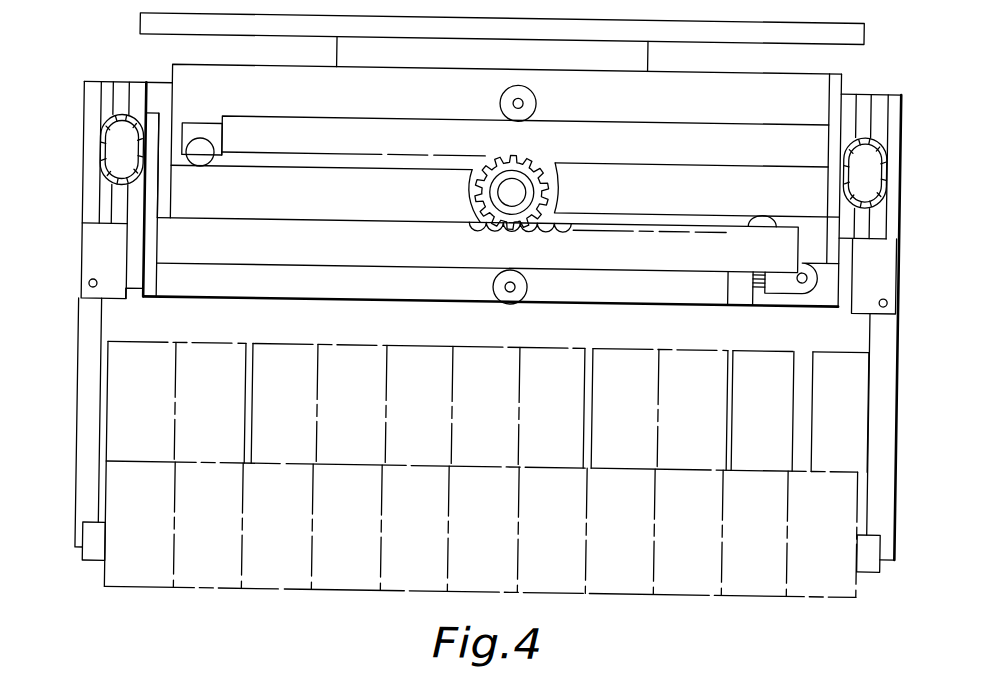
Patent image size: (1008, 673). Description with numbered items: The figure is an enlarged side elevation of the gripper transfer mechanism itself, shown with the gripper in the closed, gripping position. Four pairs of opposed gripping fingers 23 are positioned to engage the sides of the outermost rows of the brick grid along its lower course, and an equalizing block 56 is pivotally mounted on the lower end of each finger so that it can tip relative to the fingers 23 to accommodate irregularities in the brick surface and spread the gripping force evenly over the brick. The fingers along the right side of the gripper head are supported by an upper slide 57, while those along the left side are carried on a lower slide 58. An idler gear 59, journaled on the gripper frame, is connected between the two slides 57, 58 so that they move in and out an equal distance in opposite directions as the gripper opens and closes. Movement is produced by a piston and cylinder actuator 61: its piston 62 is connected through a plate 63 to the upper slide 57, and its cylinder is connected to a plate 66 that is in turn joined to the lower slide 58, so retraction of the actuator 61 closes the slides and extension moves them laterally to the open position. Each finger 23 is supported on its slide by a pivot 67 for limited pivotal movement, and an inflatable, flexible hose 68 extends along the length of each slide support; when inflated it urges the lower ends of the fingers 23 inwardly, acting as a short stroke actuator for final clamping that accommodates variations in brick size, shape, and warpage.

The gripping fingers 23 is at (76, 379).
The equalizing block 56 is at (97, 561).
The slide 57 is at (719, 132).
The lower slide 58 is at (338, 220).
The idler gear 59 is at (535, 162).
The piston and cylinder actuator 61 is at (420, 289).
The piston 62 is at (779, 284).
The plate 63 is at (827, 218).
The plate 66 is at (156, 255).
The pivot 67 is at (88, 293).
The inflatable, flexible hose 68 is at (494, 161).